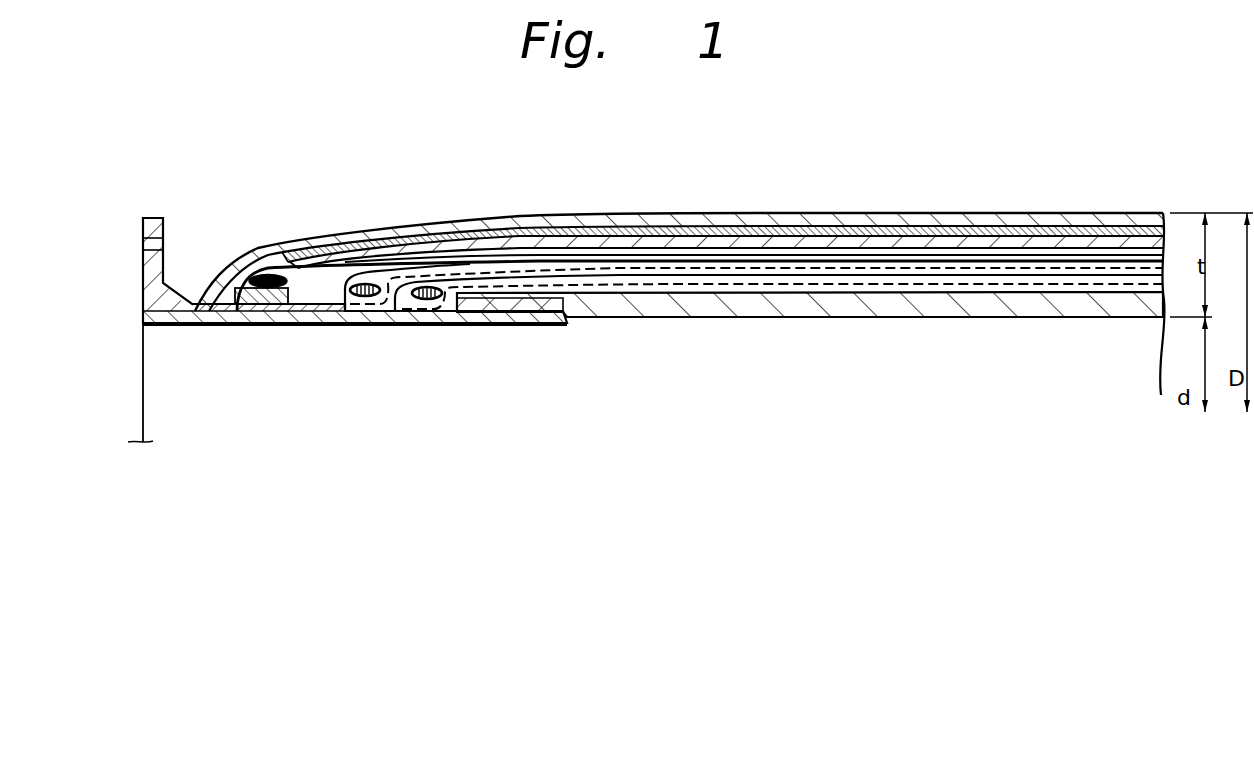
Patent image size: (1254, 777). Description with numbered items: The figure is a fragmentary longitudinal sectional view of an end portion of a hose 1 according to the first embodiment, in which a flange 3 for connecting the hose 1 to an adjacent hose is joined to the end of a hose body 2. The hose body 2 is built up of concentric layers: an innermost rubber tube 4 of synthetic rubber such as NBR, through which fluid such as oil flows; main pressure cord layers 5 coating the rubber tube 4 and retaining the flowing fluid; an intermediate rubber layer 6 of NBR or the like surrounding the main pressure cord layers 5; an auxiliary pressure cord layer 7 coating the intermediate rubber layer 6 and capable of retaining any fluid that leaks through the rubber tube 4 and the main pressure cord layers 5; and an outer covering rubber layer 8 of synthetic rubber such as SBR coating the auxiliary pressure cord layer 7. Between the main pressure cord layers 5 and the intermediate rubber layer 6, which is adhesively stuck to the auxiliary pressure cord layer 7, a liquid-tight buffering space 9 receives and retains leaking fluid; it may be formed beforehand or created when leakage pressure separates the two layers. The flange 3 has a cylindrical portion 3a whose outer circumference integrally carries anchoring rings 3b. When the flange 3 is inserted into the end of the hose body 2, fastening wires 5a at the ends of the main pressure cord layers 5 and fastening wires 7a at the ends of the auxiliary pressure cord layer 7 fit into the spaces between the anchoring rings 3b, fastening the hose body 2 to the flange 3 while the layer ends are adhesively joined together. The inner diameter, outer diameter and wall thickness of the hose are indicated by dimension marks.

The hose 1 is at (717, 198).
The hose body 2 is at (993, 211).
The flange 3 is at (168, 328).
The cylindrical portion 3a is at (420, 309).
The anchoring rings 3b is at (319, 311).
The rubber tube 4 is at (820, 306).
The main pressure cord layers 5 is at (1057, 262).
The fastening wires 5a is at (367, 297).
The intermediate rubber layer 6 is at (627, 246).
The auxiliary pressure cord layer 7 is at (903, 238).
The fastening wires 7a is at (262, 305).
The covering rubber layer 8 is at (848, 217).
The buffering space 9 is at (720, 258).